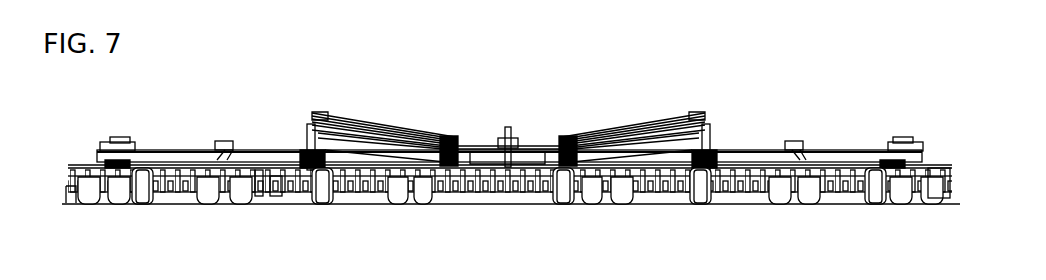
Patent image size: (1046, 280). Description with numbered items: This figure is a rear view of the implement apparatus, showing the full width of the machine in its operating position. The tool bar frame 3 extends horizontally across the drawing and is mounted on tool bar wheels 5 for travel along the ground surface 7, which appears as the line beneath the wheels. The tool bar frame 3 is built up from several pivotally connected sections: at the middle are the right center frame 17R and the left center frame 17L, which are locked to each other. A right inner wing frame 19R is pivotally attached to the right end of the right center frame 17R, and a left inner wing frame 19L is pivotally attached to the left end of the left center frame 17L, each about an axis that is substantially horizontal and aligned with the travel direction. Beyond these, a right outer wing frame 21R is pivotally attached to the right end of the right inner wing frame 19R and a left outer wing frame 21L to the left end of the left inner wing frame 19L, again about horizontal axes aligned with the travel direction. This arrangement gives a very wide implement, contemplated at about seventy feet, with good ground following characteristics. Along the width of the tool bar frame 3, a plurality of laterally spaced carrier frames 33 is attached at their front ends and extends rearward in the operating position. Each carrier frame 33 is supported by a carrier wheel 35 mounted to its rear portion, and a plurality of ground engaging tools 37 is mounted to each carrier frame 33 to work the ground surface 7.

The tool bar frame 3 is at (757, 150).
The tool bar wheels 5 is at (947, 168).
The ground surface 7 is at (68, 203).
The left center frame 17L is at (412, 142).
The right center frame 17R is at (585, 142).
The left inner wing frame 19L is at (248, 150).
The right inner wing frame 19R is at (736, 150).
The left outer wing frame 21L is at (170, 150).
The right outer wing frame 21R is at (848, 150).
The carrier frames 33 is at (262, 204).
The carrier wheel 35 is at (153, 204).
The ground engaging tools 37 is at (278, 204).